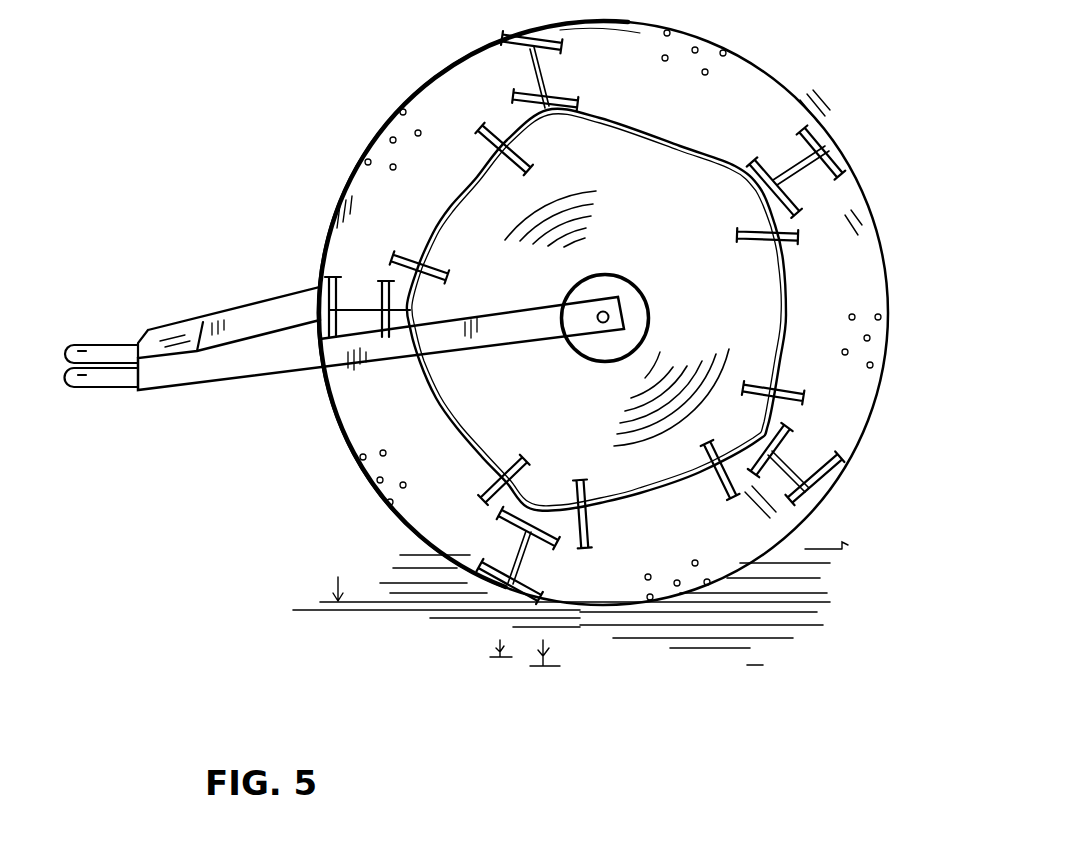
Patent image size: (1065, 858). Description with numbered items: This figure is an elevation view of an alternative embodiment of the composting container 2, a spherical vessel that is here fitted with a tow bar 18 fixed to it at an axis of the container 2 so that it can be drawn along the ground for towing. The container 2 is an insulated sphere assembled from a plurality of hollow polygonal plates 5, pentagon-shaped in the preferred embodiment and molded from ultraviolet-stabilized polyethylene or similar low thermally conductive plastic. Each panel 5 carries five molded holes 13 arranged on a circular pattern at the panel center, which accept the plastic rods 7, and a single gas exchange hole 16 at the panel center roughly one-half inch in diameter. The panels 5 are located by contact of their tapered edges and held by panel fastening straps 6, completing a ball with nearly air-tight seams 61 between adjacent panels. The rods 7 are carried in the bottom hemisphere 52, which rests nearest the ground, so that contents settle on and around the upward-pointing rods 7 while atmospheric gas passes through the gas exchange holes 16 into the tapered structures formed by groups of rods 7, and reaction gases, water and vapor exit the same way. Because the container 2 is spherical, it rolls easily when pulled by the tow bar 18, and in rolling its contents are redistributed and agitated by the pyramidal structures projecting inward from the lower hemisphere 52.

The container 2 is at (843, 505).
The polygonal plate 5 is at (777, 92).
The panel fastening strap 6 is at (507, 157).
The plastic rod 7 is at (880, 316).
The molded hole 13 is at (403, 110).
The gas exchange hole 16 is at (393, 140).
The tow bar 18 is at (177, 327).
The bottom hemisphere 52 is at (340, 410).
The seam 61 is at (455, 200).